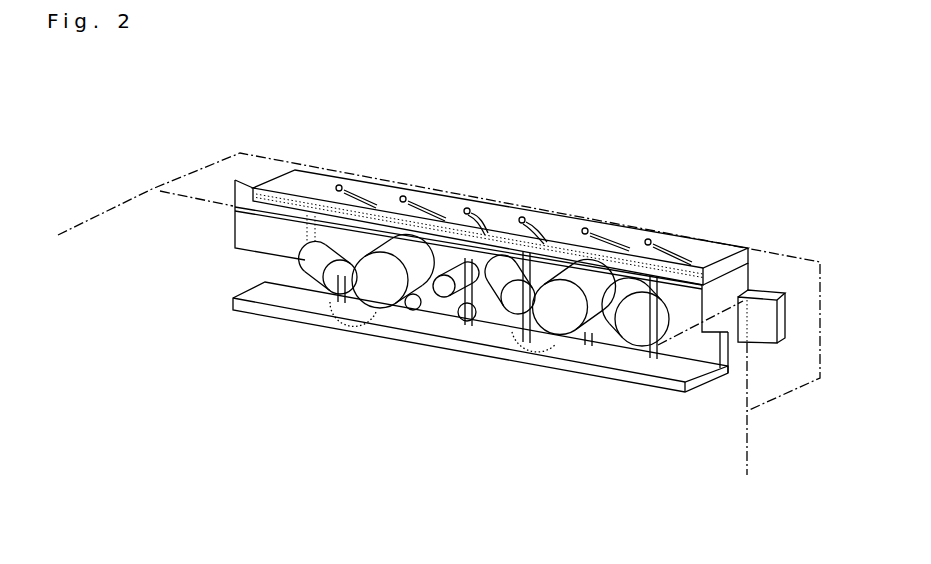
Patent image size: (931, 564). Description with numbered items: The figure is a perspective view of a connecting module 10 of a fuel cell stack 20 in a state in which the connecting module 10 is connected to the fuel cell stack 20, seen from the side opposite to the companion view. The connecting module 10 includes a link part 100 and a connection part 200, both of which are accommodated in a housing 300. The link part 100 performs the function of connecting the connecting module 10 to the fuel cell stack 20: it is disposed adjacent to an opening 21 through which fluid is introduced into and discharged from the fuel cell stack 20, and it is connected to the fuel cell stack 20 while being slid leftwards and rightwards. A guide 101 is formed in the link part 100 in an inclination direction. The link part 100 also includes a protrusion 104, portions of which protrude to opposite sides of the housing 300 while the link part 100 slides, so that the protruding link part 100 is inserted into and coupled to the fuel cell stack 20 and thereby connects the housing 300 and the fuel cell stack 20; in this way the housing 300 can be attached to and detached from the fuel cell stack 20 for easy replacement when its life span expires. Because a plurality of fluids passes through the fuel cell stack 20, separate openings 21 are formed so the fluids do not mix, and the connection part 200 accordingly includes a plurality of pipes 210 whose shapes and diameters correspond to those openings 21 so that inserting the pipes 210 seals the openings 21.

The connecting module 10 is at (723, 232).
The fuel cell stack 20 is at (135, 190).
The opening 21 is at (487, 363).
The link part 100 is at (442, 197).
The guide 101 is at (603, 237).
The protrusion 104 is at (767, 332).
The connection part 200 is at (563, 342).
The pipe 210 is at (627, 327).
The housing 300 is at (530, 197).